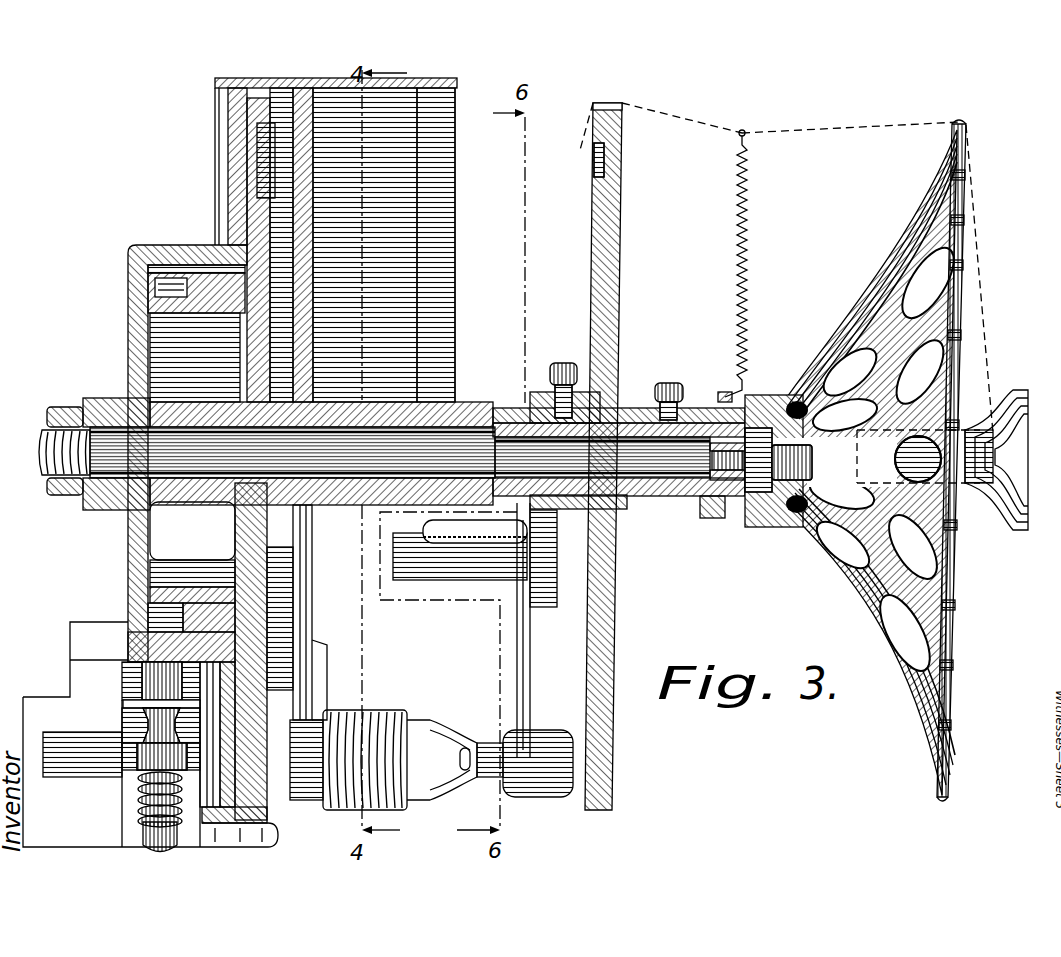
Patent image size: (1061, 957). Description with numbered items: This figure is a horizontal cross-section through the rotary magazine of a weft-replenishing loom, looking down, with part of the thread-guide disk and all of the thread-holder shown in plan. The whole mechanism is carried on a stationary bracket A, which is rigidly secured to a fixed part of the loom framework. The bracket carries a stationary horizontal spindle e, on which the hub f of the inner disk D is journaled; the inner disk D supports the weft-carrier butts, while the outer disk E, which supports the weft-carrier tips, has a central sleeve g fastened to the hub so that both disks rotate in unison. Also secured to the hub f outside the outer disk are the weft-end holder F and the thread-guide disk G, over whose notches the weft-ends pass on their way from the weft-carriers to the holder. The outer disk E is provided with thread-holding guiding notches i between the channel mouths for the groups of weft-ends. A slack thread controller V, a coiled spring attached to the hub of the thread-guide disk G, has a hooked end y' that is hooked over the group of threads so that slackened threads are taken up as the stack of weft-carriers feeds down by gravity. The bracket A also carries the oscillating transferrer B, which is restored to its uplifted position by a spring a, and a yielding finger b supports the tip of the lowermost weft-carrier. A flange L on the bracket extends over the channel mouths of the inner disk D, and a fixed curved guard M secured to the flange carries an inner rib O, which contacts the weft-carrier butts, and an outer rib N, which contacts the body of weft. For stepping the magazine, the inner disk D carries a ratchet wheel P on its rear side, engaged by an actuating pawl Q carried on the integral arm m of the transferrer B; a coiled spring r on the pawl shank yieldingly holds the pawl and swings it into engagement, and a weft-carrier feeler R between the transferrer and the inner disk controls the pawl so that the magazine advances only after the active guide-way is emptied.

The inner disk D is at (215, 210).
The ratchet wheel P is at (150, 305).
The inner rib O is at (300, 367).
The fixed curved guard M is at (397, 203).
The outer rib N is at (447, 287).
The hub f is at (460, 408).
The central sleeve g is at (546, 390).
The stationary horizontal spindle e is at (40, 446).
The thread-guide disk G is at (953, 145).
The thread-holding guiding notches i is at (950, 600).
The weft-end holder F is at (1028, 393).
The outer disk E is at (622, 223).
The hooked end y' is at (728, 149).
The slack thread controller V is at (750, 262).
The weft-carrier feeler R is at (295, 567).
The transferrer B is at (313, 620).
The spring a is at (382, 710).
The yielding finger b is at (560, 527).
The stationary bracket A is at (53, 707).
The actuating pawl Q is at (120, 655).
The flange L is at (272, 818).
The transferrer arm m is at (122, 800).
The coiled spring r is at (137, 827).